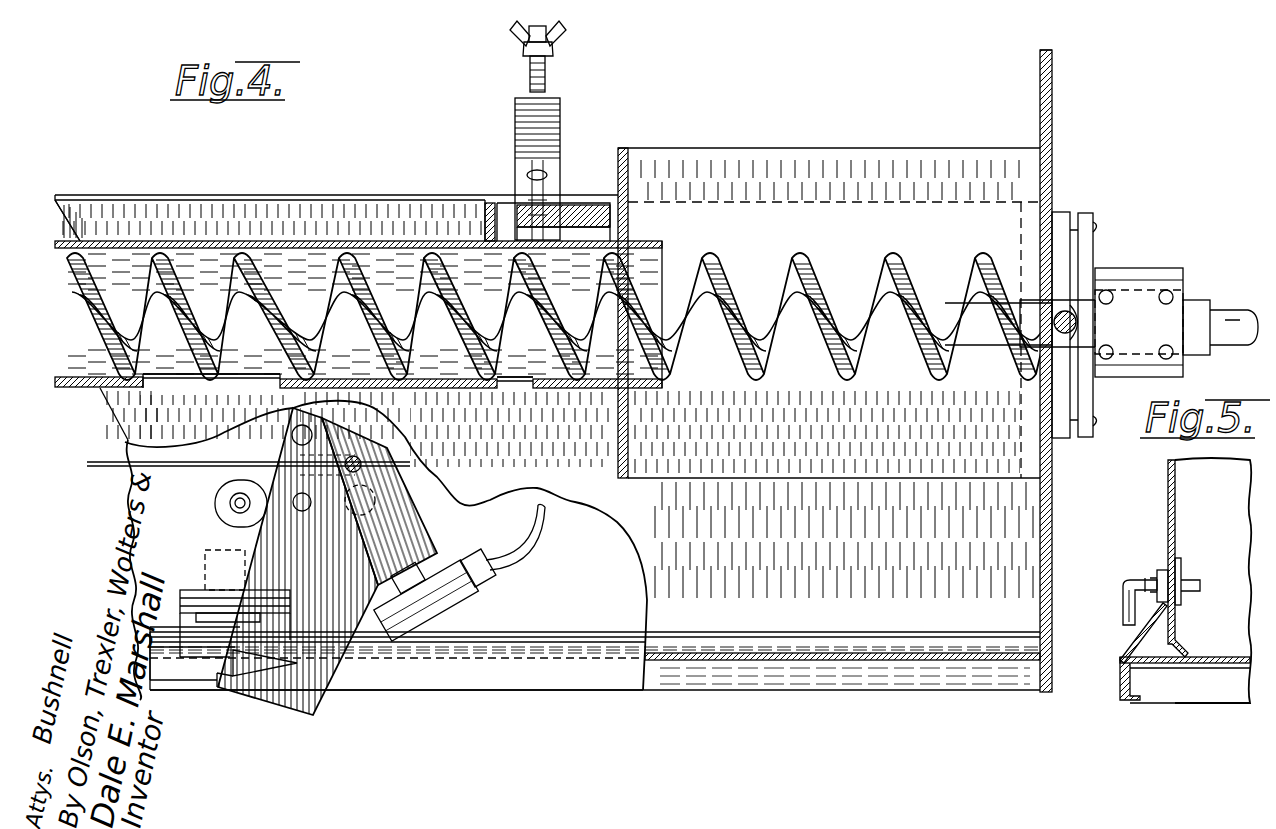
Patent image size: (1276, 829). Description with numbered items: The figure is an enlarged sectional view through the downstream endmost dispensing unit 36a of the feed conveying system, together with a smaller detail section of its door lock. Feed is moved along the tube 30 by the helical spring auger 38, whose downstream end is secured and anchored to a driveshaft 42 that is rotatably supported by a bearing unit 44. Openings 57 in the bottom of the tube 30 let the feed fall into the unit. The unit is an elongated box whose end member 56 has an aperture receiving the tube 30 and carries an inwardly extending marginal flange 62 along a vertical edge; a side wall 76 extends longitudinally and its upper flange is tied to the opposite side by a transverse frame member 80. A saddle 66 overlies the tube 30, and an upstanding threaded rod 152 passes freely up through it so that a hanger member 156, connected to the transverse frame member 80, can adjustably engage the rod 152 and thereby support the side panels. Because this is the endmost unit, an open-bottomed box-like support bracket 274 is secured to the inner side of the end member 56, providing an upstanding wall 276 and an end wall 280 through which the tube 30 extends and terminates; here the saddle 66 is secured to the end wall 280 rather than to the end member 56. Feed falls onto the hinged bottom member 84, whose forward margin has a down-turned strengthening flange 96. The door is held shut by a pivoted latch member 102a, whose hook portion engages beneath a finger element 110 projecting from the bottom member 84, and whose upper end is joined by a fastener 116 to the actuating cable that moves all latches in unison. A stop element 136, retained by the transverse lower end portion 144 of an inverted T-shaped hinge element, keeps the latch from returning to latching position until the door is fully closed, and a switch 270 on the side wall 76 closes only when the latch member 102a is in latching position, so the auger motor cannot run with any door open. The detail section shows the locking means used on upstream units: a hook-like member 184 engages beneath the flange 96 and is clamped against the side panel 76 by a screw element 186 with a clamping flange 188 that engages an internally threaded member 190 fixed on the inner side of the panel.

In FIG. 4, the tube 30 is at (80, 240).
In FIG. 4, the endmost dispensing unit 36a is at (335, 186).
In FIG. 4, the spring auger 38 is at (345, 250).
In FIG. 4, the driveshaft 42 is at (955, 300).
In FIG. 4, the bearing unit 44 is at (1175, 236).
In FIG. 4, the end member 56 is at (1067, 118).
In FIG. 4, the openings 57 is at (250, 380).
In FIG. 4, the marginal flange 62 is at (1040, 58).
In FIG. 4, the bracket or saddle 66 is at (575, 205).
In FIG. 5, the side wall 76 is at (1177, 502).
In FIG. 4, the transverse frame member 80 is at (489, 204).
In FIG. 4, the bottom member 84 is at (520, 636).
In FIG. 5, the bottom member 84 is at (1214, 665).
In FIG. 4, the strengthening flange 96 is at (470, 695).
In FIG. 5, the strengthening flange 96 is at (1160, 690).
In FIG. 4, the latch member 102a is at (330, 640).
In FIG. 4, the finger element 110 is at (245, 660).
In FIG. 4, the fastener 116 is at (388, 448).
In FIG. 4, the stop element 136 is at (195, 579).
In FIG. 4, the lower end portion of hinge element 144 is at (205, 622).
In FIG. 4, the upstanding rod or standard 152 is at (560, 72).
In FIG. 4, the hanger member 156 is at (576, 120).
In FIG. 5, the hook-like locking member 184 is at (1143, 636).
In FIG. 5, the screw element 186 is at (1137, 582).
In FIG. 5, the clamping flange 188 is at (1160, 574).
In FIG. 5, the internally threaded member 190 is at (1180, 580).
In FIG. 4, the switch 270 is at (470, 602).
In FIG. 4, the support bracket 274 is at (750, 139).
In FIG. 4, the upstanding wall 276 is at (855, 160).
In FIG. 4, the end wall 280 is at (628, 162).